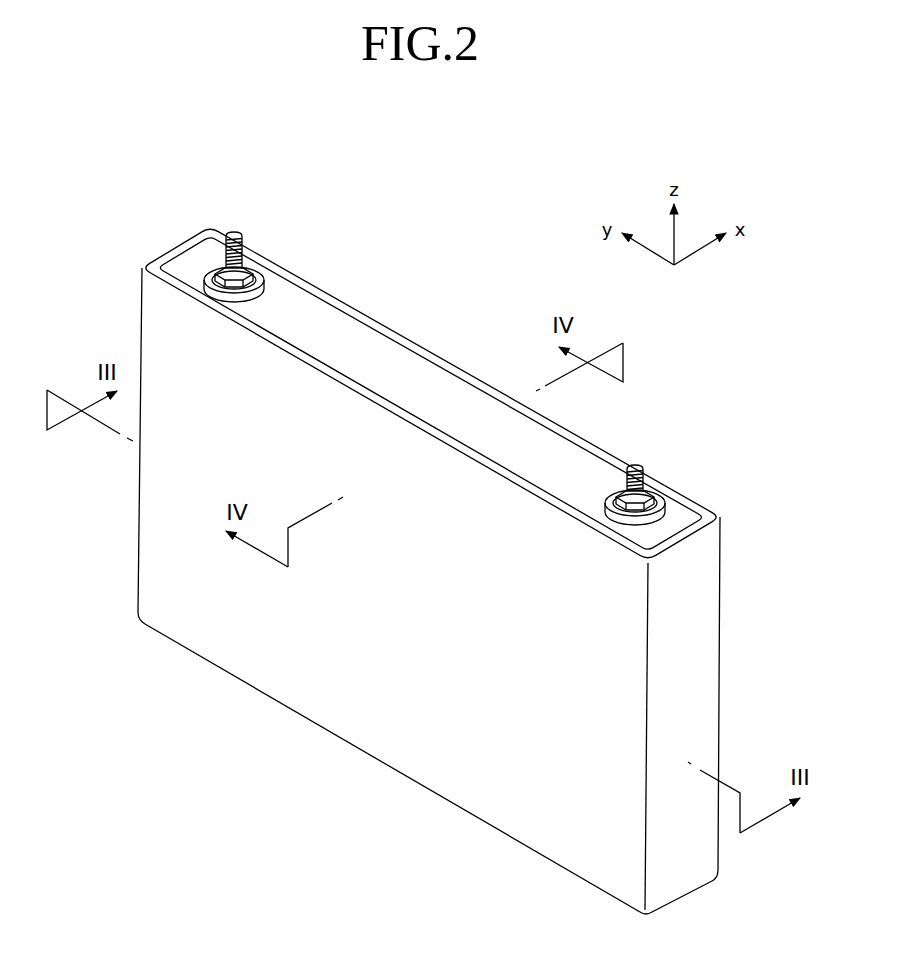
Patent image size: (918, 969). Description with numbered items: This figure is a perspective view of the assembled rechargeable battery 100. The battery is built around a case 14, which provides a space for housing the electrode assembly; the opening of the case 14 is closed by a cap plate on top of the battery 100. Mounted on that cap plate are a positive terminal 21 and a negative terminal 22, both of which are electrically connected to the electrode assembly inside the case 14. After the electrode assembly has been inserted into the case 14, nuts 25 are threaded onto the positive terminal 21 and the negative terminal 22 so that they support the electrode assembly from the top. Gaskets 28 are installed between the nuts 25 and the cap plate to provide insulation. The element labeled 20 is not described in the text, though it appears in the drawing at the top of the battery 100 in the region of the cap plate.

The rechargeable battery 100 is at (417, 228).
The case 14 is at (384, 735).
The cap plate 20 is at (392, 336).
The first electrode terminal 21 is at (233, 231).
The second electrode terminal 22 is at (637, 463).
The nut 25 is at (247, 267).
The gasket 28 is at (260, 272).